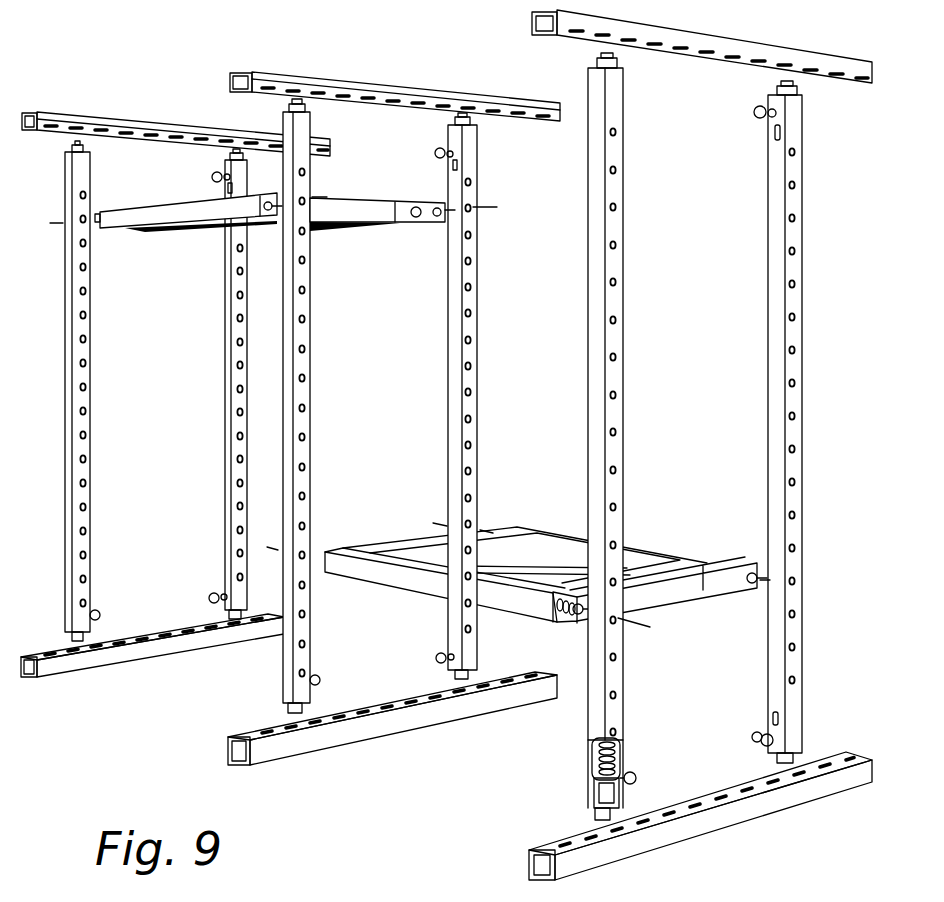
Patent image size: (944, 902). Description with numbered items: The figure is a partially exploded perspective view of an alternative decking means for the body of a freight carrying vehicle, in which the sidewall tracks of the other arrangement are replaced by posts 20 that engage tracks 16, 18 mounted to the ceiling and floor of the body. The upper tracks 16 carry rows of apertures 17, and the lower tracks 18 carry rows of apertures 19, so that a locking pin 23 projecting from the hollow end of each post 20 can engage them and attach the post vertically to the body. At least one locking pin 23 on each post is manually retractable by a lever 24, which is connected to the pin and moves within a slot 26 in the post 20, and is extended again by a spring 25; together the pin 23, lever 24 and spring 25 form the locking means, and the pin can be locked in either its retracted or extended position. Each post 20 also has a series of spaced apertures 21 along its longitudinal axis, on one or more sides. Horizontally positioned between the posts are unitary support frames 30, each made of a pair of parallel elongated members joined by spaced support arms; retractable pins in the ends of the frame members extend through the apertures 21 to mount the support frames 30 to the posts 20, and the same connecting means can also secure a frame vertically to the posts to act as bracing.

The track 16 is at (111, 121).
The apertures 17 is at (147, 145).
The track 18 is at (185, 648).
The apertures 19 is at (144, 636).
The post 20 is at (92, 378).
The apertures 21 is at (88, 419).
The locking pin 23 is at (598, 812).
The lever 24 is at (637, 778).
The spring 25 is at (620, 740).
The slot 26 is at (773, 725).
The unitary support frame 30 is at (690, 544).